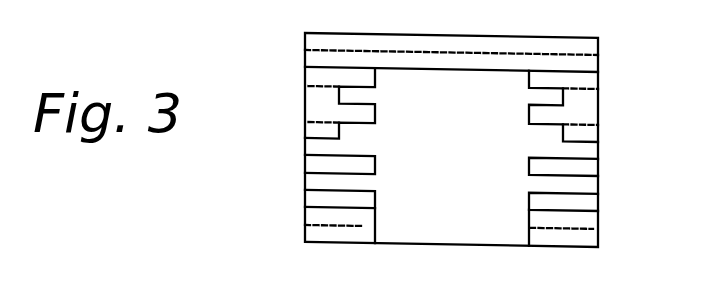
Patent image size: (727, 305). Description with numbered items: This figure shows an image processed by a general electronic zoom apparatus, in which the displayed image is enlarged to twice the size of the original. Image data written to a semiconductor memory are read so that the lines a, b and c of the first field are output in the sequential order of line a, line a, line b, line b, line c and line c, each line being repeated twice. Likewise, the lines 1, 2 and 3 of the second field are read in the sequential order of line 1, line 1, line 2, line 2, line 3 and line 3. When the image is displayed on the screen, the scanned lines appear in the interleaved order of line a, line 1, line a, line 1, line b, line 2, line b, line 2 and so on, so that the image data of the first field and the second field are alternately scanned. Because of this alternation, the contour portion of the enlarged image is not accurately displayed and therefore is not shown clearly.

The line a is at (311, 70).
The line b is at (311, 142).
The line c is at (311, 219).
The line 1 is at (592, 95).
The line 2 is at (592, 167).
The line 3 is at (592, 235).